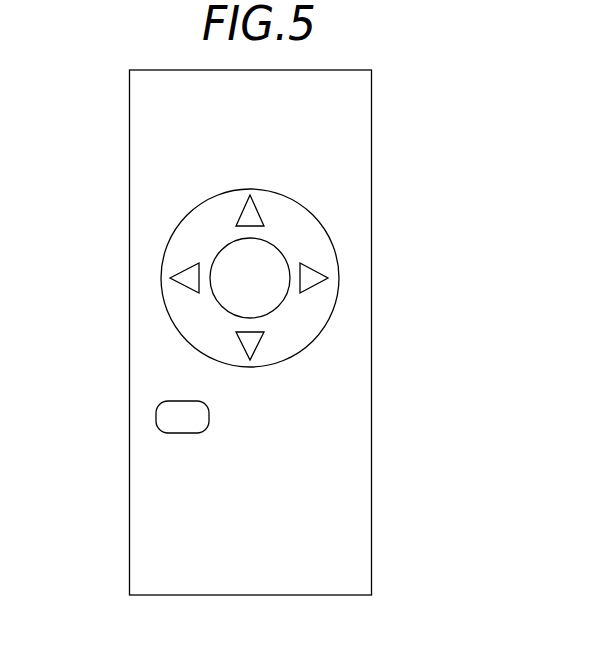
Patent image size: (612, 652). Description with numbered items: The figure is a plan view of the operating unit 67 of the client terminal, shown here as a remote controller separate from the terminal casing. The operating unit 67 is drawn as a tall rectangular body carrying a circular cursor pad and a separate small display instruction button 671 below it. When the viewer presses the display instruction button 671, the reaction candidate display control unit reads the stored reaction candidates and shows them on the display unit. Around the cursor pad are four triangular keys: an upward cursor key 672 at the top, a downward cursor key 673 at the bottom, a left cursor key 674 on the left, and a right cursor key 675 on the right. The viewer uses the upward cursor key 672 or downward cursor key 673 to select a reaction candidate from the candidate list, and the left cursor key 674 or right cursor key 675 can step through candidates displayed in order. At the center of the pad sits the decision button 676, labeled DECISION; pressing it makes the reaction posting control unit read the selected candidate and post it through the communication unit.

The operating unit 67 is at (372, 110).
The display instruction button 671 is at (180, 433).
The upward cursor key 672 is at (258, 213).
The downward cursor key 673 is at (260, 345).
The left cursor key 674 is at (168, 277).
The right cursor key 675 is at (318, 274).
The decision button 676 is at (282, 248).